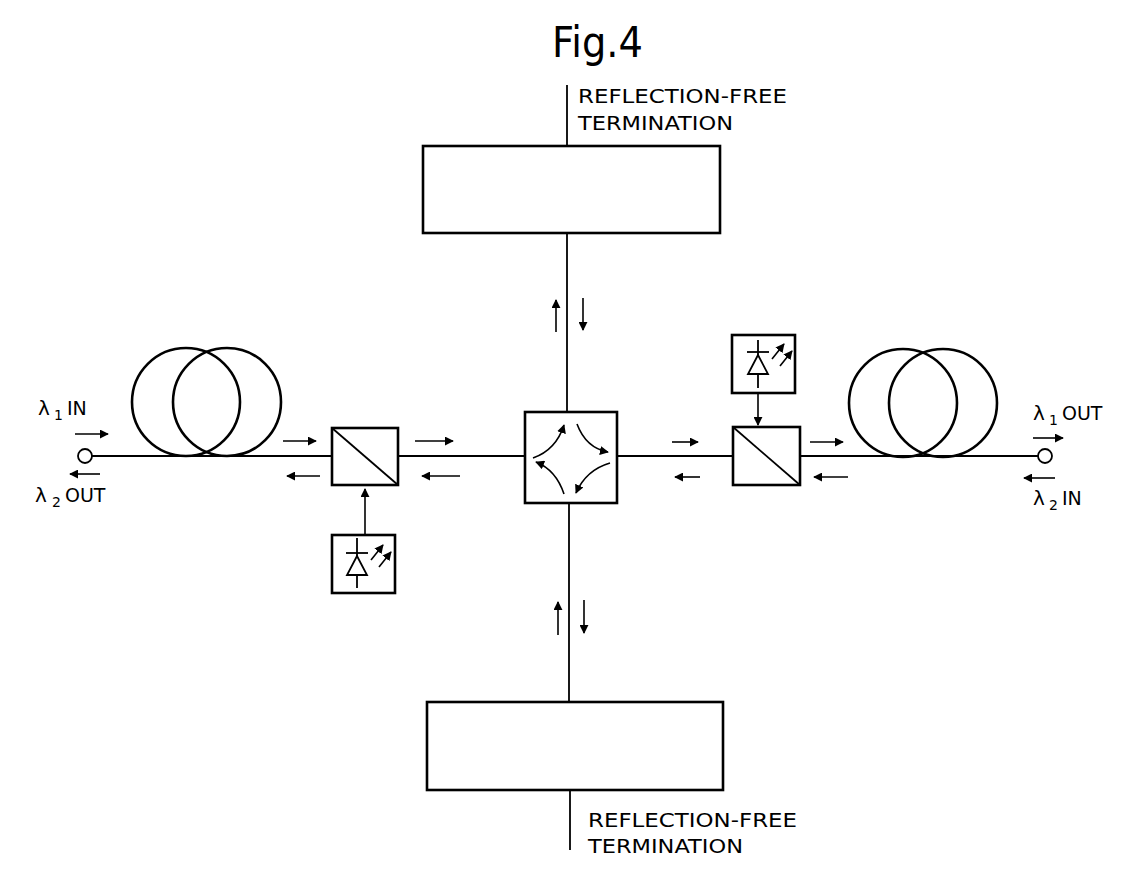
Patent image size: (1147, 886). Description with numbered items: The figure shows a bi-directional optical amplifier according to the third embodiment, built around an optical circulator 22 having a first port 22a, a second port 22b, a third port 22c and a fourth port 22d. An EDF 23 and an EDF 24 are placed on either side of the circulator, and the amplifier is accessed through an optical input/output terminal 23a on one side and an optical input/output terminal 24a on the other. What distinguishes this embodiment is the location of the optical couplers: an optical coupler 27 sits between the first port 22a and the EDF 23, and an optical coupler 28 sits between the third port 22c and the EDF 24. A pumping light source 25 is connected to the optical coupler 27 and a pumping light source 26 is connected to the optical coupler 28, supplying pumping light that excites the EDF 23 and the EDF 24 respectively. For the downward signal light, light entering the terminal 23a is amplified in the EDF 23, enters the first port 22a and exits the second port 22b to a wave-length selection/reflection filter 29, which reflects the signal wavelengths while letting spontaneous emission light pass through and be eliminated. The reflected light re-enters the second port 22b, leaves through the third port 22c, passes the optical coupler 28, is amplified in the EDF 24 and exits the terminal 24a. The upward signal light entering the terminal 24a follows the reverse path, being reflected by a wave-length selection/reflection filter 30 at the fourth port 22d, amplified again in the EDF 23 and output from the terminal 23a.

The optical circulator 22 is at (522, 413).
The first port 22a is at (461, 442).
The second port 22b is at (542, 322).
The third port 22c is at (675, 442).
The fourth port 22d is at (594, 602).
The EDF 23 is at (163, 351).
The optical input/output terminal 23a is at (132, 456).
The EDF 24 is at (945, 350).
The optical input/output terminal 24a is at (981, 456).
The pumping light source 25 is at (350, 593).
The pumping light source 26 is at (772, 335).
The optical coupler 27 is at (365, 428).
The optical coupler 28 is at (775, 485).
The wave-length selection/reflection filter 29 is at (720, 187).
The wave-length selection/reflection filter 30 is at (723, 740).